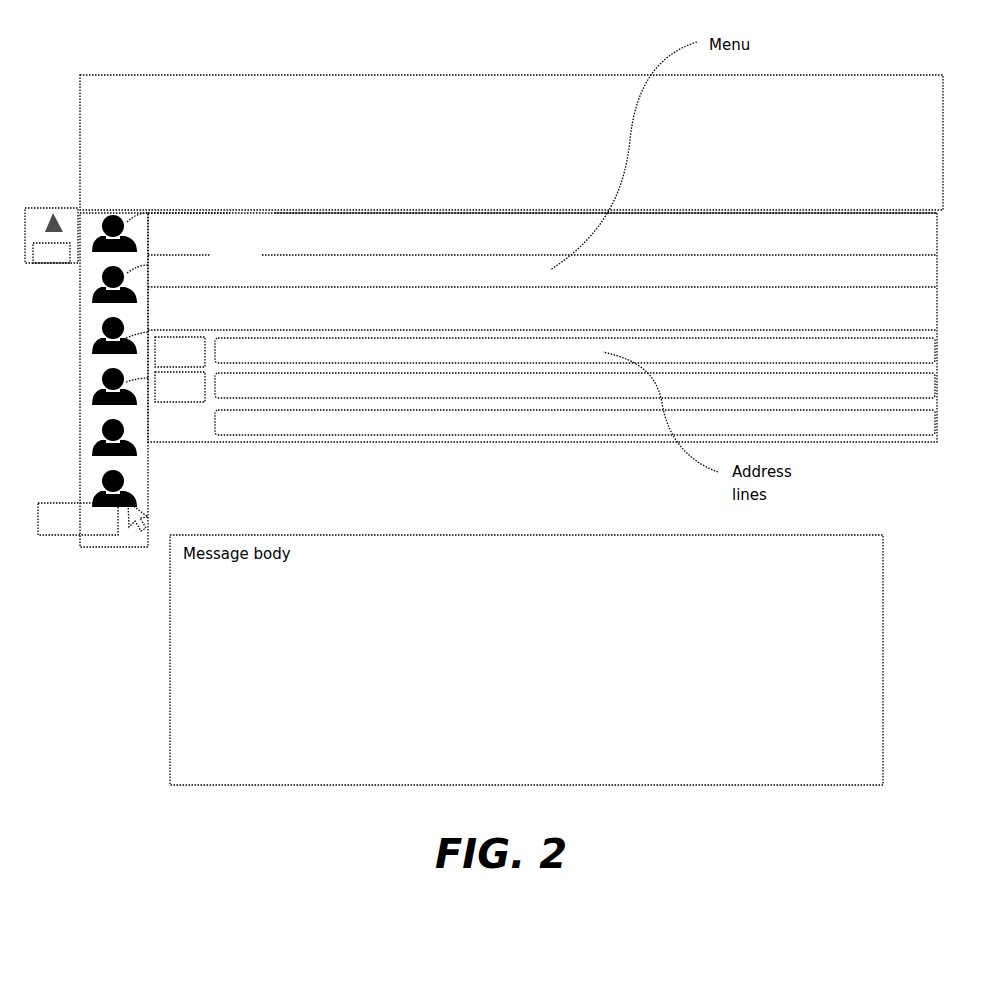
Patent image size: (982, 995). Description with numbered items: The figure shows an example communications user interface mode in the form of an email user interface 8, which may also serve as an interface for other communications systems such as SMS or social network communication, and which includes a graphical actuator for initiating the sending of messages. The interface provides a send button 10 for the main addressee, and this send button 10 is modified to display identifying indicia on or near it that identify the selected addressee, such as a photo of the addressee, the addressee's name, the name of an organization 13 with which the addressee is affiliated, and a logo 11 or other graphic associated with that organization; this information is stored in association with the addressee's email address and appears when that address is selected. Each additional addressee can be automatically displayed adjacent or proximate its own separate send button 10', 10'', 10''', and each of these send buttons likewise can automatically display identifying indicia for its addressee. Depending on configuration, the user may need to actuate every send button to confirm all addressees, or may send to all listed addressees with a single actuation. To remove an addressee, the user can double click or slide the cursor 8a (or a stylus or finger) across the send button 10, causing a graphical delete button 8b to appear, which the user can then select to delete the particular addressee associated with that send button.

The email user interface 8 is at (50, 103).
The cursor 8a is at (148, 518).
The delete button 8b is at (70, 533).
The send button 10 is at (159, 345).
The send button 10' is at (542, 248).
The send button 10'' is at (542, 291).
The send button 10''' is at (542, 366).
The logo 11 is at (55, 223).
The name of organization 13 is at (53, 264).